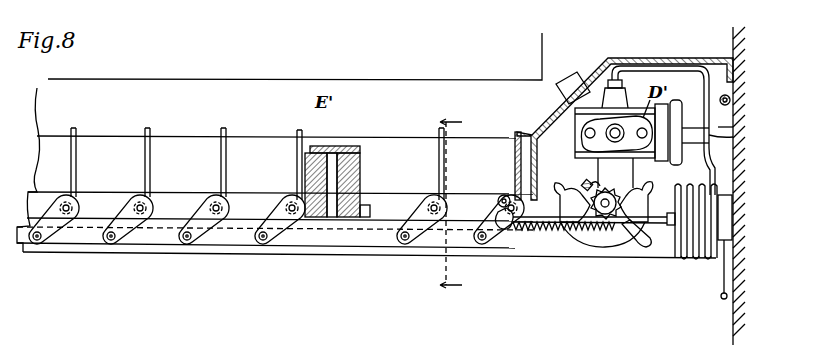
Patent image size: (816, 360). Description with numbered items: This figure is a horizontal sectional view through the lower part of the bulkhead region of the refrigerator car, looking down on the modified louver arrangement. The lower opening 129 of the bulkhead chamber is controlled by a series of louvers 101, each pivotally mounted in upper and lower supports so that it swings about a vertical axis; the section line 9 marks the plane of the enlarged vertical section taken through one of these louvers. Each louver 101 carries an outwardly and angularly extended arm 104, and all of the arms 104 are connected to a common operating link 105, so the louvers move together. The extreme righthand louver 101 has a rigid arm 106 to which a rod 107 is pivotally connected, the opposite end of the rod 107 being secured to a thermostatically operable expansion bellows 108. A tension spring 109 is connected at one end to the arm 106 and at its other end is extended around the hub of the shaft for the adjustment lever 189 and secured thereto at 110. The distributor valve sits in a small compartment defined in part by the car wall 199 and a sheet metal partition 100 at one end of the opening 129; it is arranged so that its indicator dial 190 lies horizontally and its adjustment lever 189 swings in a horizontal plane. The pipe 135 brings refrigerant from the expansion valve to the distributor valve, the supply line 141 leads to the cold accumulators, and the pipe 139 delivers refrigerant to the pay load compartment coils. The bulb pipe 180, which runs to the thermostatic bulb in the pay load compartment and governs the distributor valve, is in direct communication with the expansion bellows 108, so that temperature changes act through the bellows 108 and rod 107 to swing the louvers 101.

The section line 9- 9 is at (451, 205).
The sheet metal partition 100 is at (610, 60).
The louvers 101 is at (221, 155).
The arm 104 is at (186, 234).
The operating link 105 is at (245, 238).
The rigid arm 106 is at (502, 196).
The rod 107 is at (657, 226).
The expansion bellows 108 is at (710, 262).
The tension spring 109 is at (551, 226).
The spring securing point 110 is at (592, 192).
The lower opening 129 is at (398, 192).
The pipe 135 is at (731, 98).
The pipe 139 is at (607, 134).
The supply line 141 is at (557, 93).
The bulb pipe 180 is at (684, 67).
The adjustment lever 189 is at (641, 242).
The indicator dial 190 is at (595, 243).
The car wall 199 is at (745, 110).